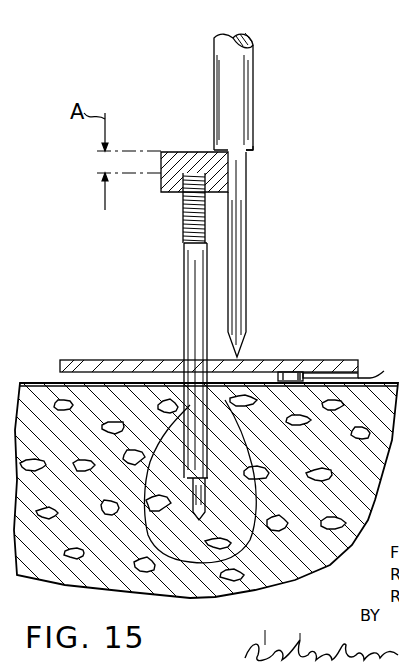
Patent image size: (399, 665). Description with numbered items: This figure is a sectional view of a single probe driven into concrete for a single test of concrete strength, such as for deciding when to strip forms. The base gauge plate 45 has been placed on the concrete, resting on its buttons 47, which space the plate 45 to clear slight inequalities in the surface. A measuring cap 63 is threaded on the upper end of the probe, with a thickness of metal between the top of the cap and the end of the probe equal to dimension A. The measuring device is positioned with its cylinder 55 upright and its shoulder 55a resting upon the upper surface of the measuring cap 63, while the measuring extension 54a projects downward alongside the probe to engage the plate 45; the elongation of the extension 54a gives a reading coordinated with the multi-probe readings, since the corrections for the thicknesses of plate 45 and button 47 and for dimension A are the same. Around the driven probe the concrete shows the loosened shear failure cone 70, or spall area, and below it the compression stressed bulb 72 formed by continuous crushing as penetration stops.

The cylinder 55 is at (233, 86).
The shoulder 55a is at (250, 152).
The measuring cap 63 is at (175, 157).
The measuring extension 54a is at (240, 243).
The base gauge plate 45 is at (288, 360).
The button 47 is at (338, 366).
The shear failure cone 70 is at (239, 431).
The compression stressed bulb 72 is at (199, 490).